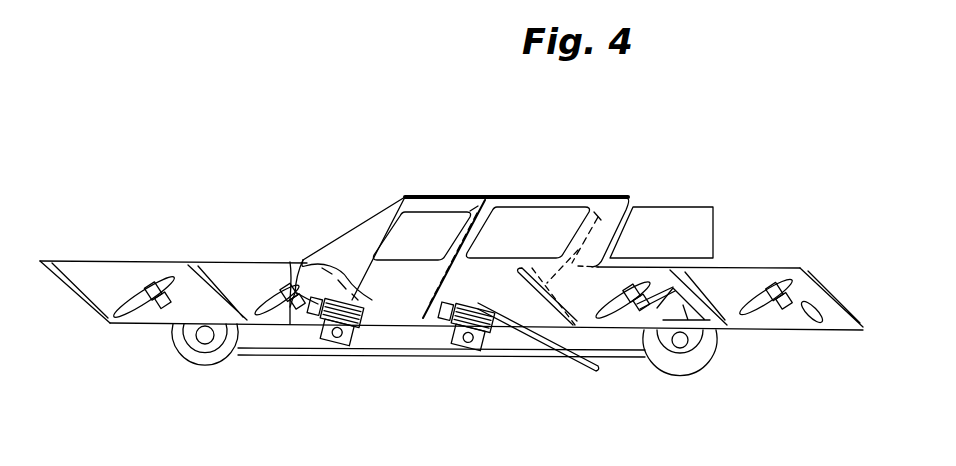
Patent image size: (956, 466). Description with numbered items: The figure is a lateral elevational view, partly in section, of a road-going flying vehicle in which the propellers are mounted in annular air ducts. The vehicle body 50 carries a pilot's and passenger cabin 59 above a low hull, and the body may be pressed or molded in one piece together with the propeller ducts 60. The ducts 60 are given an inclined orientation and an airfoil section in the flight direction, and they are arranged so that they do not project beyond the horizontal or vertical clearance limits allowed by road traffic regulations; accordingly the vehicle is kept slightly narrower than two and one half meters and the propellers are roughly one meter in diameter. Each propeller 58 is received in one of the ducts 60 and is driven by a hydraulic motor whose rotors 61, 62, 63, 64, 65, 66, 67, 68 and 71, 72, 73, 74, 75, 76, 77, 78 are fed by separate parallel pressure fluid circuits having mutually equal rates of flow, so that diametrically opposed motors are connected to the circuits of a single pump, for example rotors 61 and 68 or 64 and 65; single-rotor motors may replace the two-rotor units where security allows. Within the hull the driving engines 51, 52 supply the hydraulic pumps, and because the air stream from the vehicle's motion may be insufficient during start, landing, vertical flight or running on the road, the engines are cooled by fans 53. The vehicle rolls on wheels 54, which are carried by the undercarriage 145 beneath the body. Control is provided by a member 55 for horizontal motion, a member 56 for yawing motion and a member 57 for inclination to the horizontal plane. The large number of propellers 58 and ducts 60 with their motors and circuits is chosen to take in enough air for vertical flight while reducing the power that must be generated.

The vehicle body 50 is at (510, 208).
The driving engine 51 is at (356, 330).
The driving engine 52 is at (484, 332).
The fan 53 is at (402, 353).
The wheel 54 is at (200, 362).
The member for controlling horizontal motion 55 is at (700, 227).
The member for controlling yawing motion 56 is at (695, 325).
The member for controlling inclination 57 is at (812, 305).
The propeller 58 is at (463, 311).
The pilot's and passenger cabin 59 is at (425, 232).
The propeller duct 60 is at (97, 278).
The rotor 61 is at (147, 359).
The rotor 62 is at (147, 359).
The rotor 63 is at (276, 365).
The rotor 64 is at (276, 365).
The rotor 65 is at (617, 371).
The rotor 66 is at (617, 371).
The rotor 67 is at (769, 360).
The rotor 68 is at (769, 360).
The rotor 71 is at (147, 359).
The rotor 72 is at (158, 310).
The rotor 73 is at (276, 365).
The rotor 74 is at (289, 305).
The rotor 75 is at (617, 371).
The rotor 76 is at (626, 318).
The rotor 77 is at (769, 360).
The rotor 78 is at (778, 318).
The undercarriage 145 is at (533, 345).